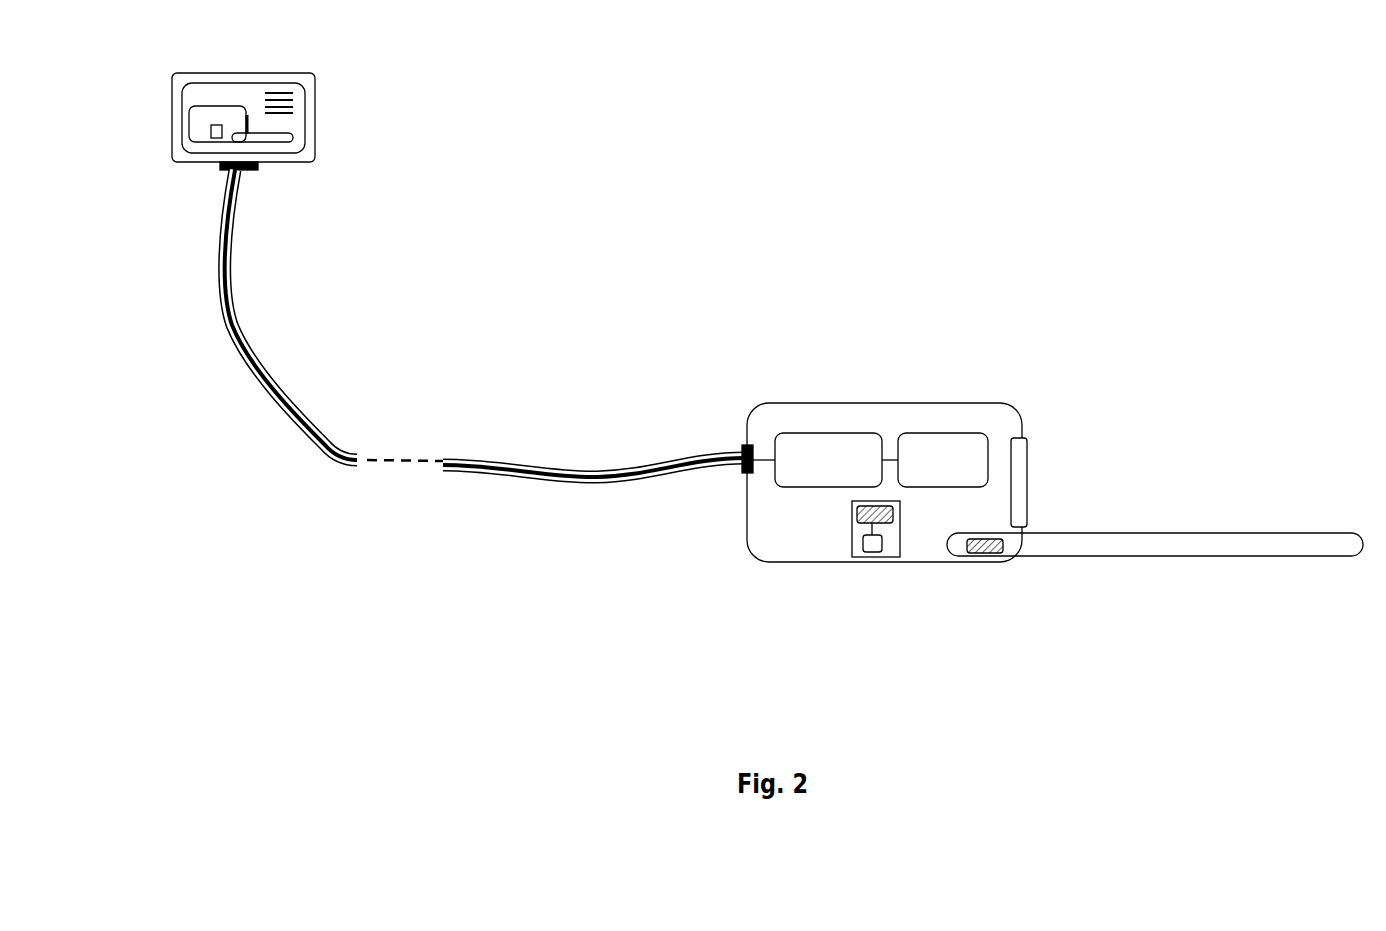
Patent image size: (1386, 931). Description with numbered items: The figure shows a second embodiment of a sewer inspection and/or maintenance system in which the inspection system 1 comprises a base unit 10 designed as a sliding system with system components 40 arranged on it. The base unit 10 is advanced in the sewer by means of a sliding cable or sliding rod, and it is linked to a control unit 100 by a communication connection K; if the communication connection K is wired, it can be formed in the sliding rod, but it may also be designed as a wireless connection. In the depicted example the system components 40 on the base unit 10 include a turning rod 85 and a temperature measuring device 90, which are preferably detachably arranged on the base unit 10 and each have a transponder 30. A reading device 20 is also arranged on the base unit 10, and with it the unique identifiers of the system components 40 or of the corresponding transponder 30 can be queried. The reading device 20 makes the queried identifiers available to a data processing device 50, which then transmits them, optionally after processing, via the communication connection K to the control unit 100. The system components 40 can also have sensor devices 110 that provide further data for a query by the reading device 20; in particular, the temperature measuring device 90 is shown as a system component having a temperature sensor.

The inspection system 1 is at (816, 110).
The control unit 100 is at (316, 164).
The communication connection K is at (637, 462).
The base unit 10 is at (1014, 408).
The data processing device 50 is at (828, 460).
The reading device 20 is at (943, 460).
The transponder 30 is at (851, 519).
The system component 40 is at (1073, 572).
The temperature measuring device 90 is at (846, 551).
The sensor device 110 is at (876, 549).
The turning rod 85 is at (1185, 550).